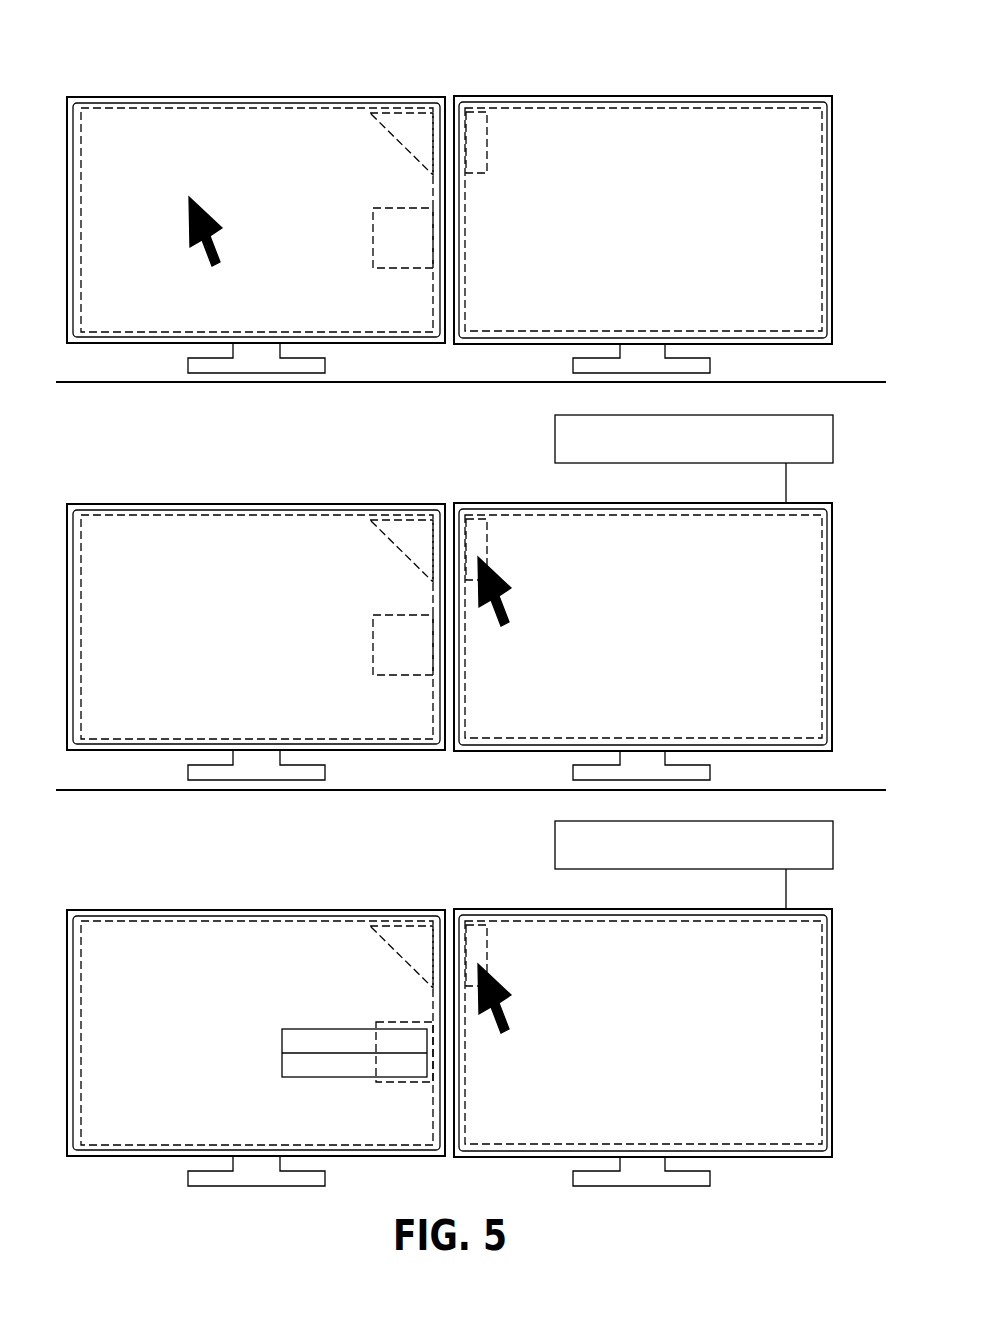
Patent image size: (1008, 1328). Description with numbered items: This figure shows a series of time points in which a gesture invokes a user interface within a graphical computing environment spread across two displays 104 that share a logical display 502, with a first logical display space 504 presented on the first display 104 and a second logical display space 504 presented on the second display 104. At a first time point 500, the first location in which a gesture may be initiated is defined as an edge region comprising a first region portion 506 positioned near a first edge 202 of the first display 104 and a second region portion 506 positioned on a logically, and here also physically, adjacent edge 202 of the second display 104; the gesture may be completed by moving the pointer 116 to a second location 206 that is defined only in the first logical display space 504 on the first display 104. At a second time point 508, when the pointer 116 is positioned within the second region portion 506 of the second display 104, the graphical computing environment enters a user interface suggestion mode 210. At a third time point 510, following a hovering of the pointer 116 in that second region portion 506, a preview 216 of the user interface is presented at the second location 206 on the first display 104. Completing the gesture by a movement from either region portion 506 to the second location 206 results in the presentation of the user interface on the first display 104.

The first time point 500 is at (143, 48).
The second time point 508 is at (143, 428).
The third time point 510 is at (143, 836).
The display 104 is at (137, 97).
The logical display 502 is at (213, 108).
The logical display space 504 is at (300, 107).
The region portion 506 is at (385, 115).
The edge 202 is at (433, 105).
The second location 206 is at (410, 209).
The pointer 116 is at (201, 206).
The user interface suggestion mode 210 is at (694, 650).
The preview 216 is at (323, 1051).